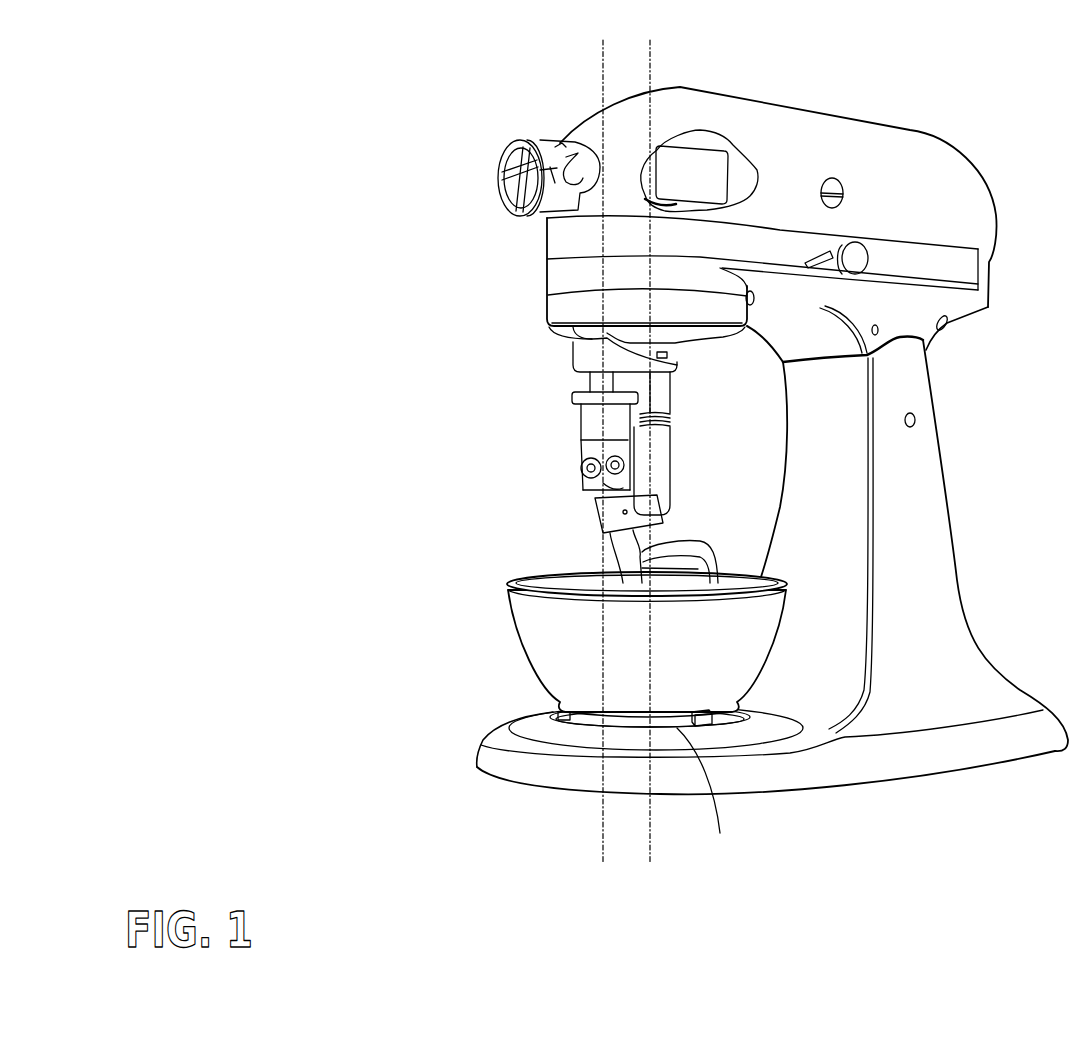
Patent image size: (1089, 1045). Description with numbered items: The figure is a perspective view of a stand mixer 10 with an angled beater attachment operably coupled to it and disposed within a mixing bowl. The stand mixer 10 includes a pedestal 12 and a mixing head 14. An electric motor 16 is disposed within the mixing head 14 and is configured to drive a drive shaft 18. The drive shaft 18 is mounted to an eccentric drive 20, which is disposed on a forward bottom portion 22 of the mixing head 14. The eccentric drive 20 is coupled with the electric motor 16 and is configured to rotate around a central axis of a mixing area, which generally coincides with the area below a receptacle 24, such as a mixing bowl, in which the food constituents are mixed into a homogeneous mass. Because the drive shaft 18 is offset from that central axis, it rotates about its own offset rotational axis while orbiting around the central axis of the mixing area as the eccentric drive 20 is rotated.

The stand mixer 10 is at (752, 457).
The pedestal 12 is at (917, 520).
The mixing head 14 is at (910, 143).
The electric motor 16 is at (693, 168).
The drive shaft 18 is at (592, 385).
The eccentric drive 20 is at (703, 337).
The forward bottom portion 22 is at (565, 310).
The receptacle 24 is at (550, 630).